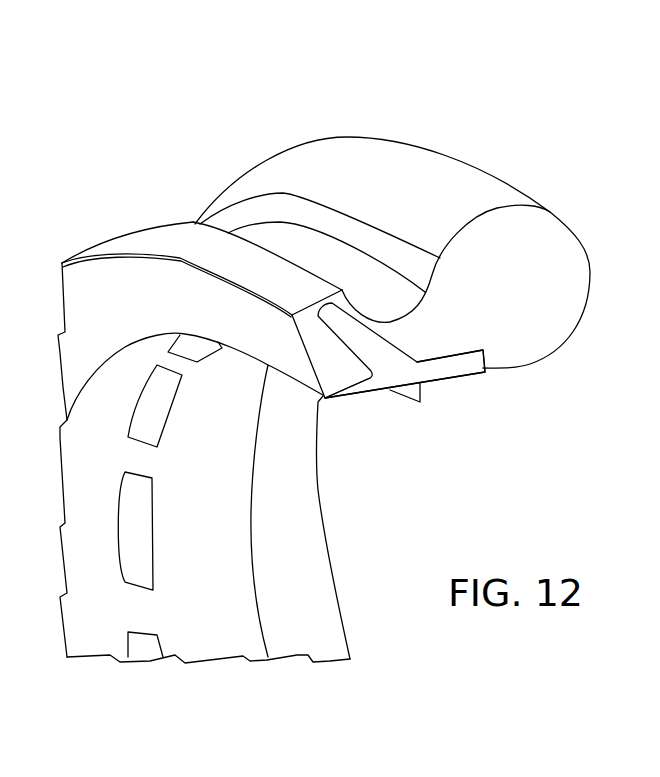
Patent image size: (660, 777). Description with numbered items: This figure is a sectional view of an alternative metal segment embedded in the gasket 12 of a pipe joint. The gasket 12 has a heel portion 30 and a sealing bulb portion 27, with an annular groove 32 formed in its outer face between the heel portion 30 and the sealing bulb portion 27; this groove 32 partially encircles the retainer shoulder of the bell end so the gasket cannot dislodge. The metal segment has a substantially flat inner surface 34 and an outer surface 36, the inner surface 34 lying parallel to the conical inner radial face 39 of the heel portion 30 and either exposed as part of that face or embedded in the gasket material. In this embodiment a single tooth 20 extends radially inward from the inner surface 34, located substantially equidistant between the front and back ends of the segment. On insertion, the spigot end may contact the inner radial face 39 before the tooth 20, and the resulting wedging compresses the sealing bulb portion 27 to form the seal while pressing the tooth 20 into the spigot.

The gasket 12 is at (578, 197).
The tooth 20 is at (140, 520).
The sealing bulb portion 27 is at (558, 327).
The heel portion 30 is at (157, 233).
The annular groove 32 is at (348, 265).
The inner surface 34 is at (462, 400).
The outer surface 36 is at (444, 335).
The inner radial face 39 is at (210, 637).